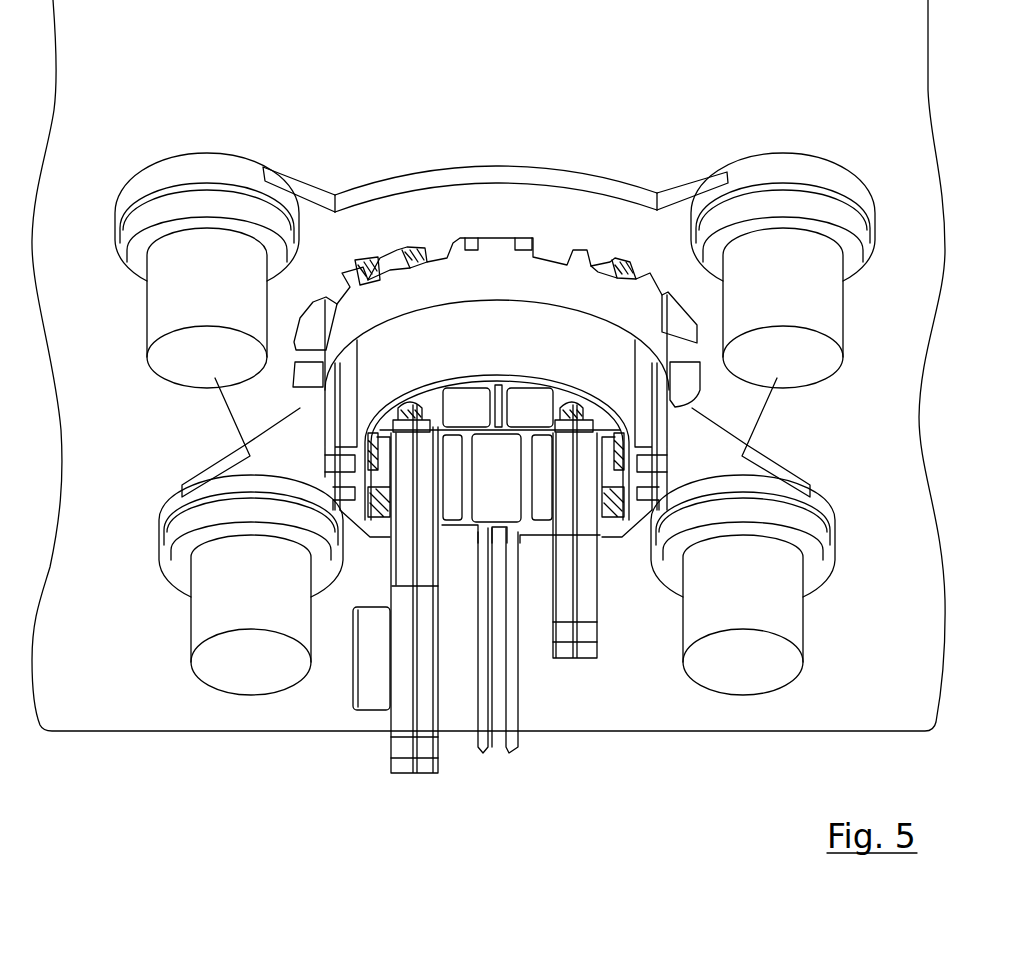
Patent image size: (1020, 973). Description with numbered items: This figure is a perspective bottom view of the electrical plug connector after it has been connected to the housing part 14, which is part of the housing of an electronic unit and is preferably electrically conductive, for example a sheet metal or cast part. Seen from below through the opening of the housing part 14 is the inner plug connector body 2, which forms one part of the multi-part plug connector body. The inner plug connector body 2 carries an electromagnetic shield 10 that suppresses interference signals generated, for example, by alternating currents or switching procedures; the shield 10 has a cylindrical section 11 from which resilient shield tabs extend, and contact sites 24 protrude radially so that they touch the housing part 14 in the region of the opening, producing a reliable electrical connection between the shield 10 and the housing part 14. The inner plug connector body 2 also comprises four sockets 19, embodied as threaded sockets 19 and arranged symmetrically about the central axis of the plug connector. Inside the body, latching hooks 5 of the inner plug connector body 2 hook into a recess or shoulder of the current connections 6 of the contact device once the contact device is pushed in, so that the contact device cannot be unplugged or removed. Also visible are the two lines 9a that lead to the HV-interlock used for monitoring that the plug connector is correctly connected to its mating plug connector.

The housing part 14 is at (150, 59).
The inner plug connector body 2 is at (697, 137).
The sockets 19 is at (162, 314).
The electromagnetic shield 10 is at (288, 393).
The cylindrical section 11 is at (395, 277).
The contact sites 24 is at (526, 237).
The latching hooks 5 is at (407, 400).
The current connections 6 is at (397, 723).
The lines 9a is at (483, 753).